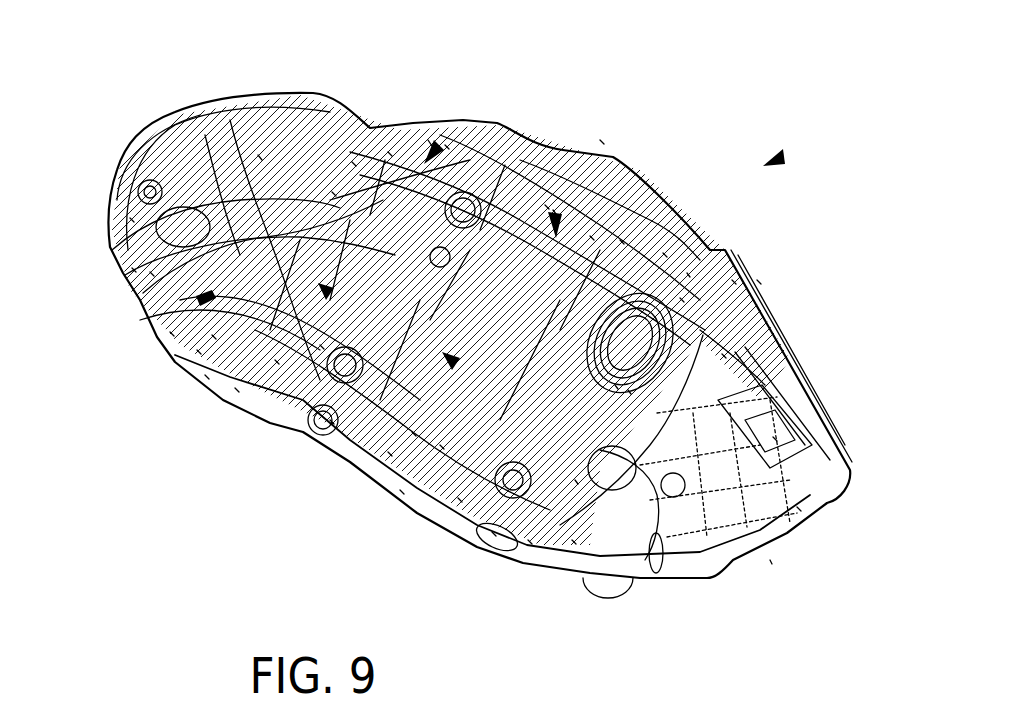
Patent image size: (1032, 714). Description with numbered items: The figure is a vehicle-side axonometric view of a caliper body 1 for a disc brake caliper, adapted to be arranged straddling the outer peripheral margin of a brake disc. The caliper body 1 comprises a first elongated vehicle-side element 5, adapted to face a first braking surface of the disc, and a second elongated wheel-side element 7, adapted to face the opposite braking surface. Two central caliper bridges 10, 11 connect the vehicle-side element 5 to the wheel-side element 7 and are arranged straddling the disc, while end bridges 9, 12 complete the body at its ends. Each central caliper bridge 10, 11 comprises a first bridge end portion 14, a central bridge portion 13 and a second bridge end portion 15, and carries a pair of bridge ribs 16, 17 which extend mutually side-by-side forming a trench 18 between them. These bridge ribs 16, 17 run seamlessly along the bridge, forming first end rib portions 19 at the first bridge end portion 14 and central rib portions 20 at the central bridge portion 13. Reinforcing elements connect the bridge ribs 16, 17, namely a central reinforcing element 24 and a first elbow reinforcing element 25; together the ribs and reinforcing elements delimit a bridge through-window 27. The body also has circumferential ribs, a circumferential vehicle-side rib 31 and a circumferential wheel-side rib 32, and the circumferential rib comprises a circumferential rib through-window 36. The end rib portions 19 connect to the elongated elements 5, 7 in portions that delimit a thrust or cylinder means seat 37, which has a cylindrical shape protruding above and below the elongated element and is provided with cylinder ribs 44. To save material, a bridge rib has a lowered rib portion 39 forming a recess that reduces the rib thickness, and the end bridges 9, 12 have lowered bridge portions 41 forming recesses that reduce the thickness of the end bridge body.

The caliper body 1 is at (775, 156).
The first elongated vehicle-side element 5 is at (440, 445).
The second elongated wheel-side element 7 is at (757, 280).
The end bridge 9 is at (162, 150).
The central caliper bridge 10 is at (428, 140).
The central caliper bridge 11 is at (663, 253).
The end bridge 12 is at (797, 507).
The central bridge portion 13 is at (352, 162).
The first bridge end portion 14 is at (412, 432).
The second bridge end portion 15 is at (553, 210).
The bridge rib 16 is at (388, 152).
The bridge rib 17 is at (472, 198).
The trench 18 is at (445, 145).
The first end rib portions 19 is at (330, 420).
The central rib portions 20 is at (332, 192).
The central reinforcing element 24 is at (572, 540).
The first elbow reinforcing element 25 is at (492, 532).
The bridge through-window 27 is at (388, 452).
The circumferential vehicle-side rib 31 is at (575, 480).
The circumferential wheel-side rib 32 is at (680, 298).
The circumferential rib through-window 36 is at (528, 540).
The thrust or cylinder means seat 37 is at (732, 280).
The lowered rib portion 39 is at (545, 205).
The lowered bridge portion 41 is at (258, 155).
The cylinder ribs 44 is at (458, 498).